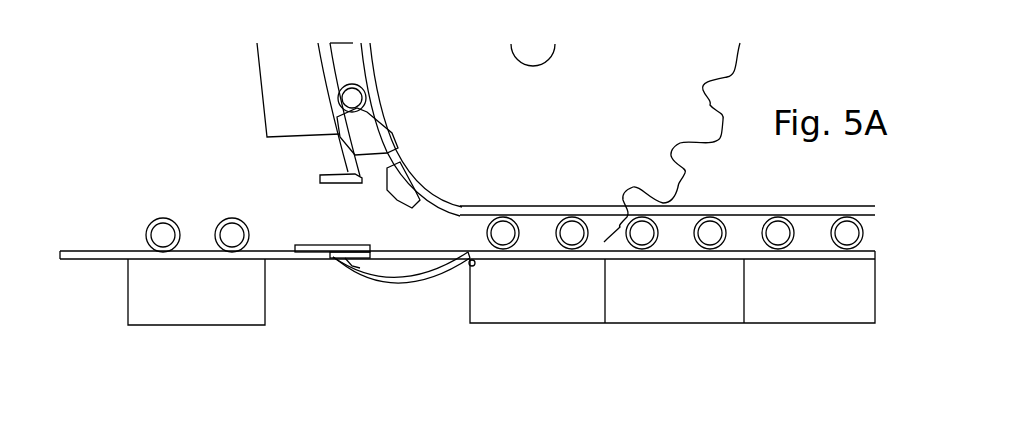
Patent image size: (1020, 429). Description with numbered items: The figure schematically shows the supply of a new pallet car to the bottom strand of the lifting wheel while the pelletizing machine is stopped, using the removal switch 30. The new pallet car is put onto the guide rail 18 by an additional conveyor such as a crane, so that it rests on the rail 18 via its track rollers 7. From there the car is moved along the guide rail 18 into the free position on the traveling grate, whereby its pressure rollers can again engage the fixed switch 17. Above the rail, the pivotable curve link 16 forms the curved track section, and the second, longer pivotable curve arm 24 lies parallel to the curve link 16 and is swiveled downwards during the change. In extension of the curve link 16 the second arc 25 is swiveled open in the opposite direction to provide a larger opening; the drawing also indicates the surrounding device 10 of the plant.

The track roller 7 is at (163, 220).
The conveyor device 10 is at (655, 176).
The pivotable curve link 16 is at (410, 283).
The fixed switch 17 is at (335, 243).
The guide rail 18 is at (95, 250).
The pivotable curve arm 24 is at (353, 265).
The second arc 25 is at (313, 178).
The removal switch 30 is at (350, 320).